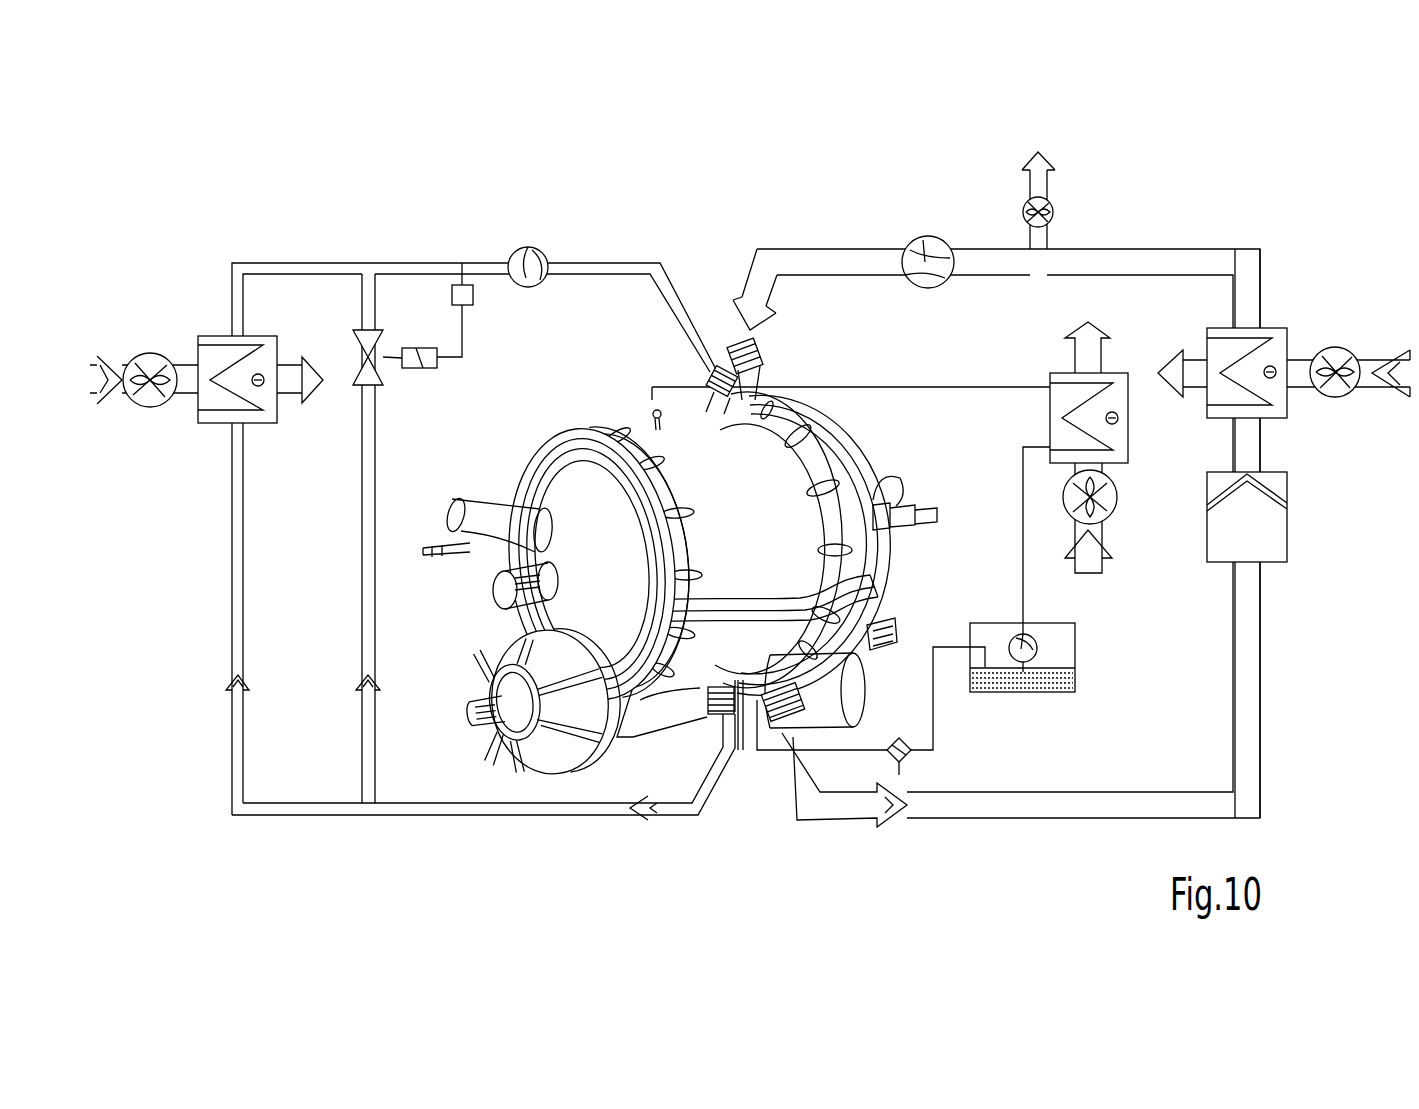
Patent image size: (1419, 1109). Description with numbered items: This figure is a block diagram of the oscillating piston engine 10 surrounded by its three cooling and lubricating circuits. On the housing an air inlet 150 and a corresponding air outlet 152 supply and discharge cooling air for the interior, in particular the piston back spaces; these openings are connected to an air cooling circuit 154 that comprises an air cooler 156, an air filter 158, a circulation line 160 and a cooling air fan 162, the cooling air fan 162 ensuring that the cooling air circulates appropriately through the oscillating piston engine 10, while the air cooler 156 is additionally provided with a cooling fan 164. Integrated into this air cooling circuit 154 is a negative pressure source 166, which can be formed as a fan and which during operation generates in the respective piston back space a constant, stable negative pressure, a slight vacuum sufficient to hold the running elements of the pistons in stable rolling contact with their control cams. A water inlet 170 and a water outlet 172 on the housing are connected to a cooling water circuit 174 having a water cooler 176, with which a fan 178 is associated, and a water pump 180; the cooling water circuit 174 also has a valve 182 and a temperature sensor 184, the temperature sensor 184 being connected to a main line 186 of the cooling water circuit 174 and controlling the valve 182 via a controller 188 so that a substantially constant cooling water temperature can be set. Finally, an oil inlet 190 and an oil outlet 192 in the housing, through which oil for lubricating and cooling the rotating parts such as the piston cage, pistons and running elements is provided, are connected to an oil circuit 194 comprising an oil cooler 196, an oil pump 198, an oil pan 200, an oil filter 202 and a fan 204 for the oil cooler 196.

The oscillating piston engine 10 is at (680, 589).
The air inlet 150 is at (765, 362).
The air outlet 152 is at (757, 752).
The air cooling circuit 154 is at (1305, 688).
The air cooler 156 is at (1265, 348).
The air filter 158 is at (1272, 530).
The circulation line 160 is at (1037, 820).
The cooling air fan 162 is at (923, 258).
The cooling fan 164 is at (1342, 372).
The negative pressure source 166 is at (1052, 211).
The water inlet 170 is at (714, 382).
The water outlet 172 is at (705, 697).
The cooling water circuit 174 is at (449, 218).
The water cooler 176 is at (212, 360).
The fan 178 is at (141, 395).
The water pump 180 is at (531, 247).
The valve 182 is at (373, 372).
The temperature sensor 184 is at (473, 300).
The main line 186 is at (295, 262).
The controller 188 is at (418, 370).
The oil inlet 190 is at (652, 414).
The oil outlet 192 is at (742, 745).
The oil circuit 194 is at (944, 378).
The oil cooler 196 is at (1050, 398).
The oil pump 198 is at (1037, 648).
The oil pan 200 is at (1050, 693).
The oil filter 202 is at (906, 758).
The fan 204 is at (1098, 498).